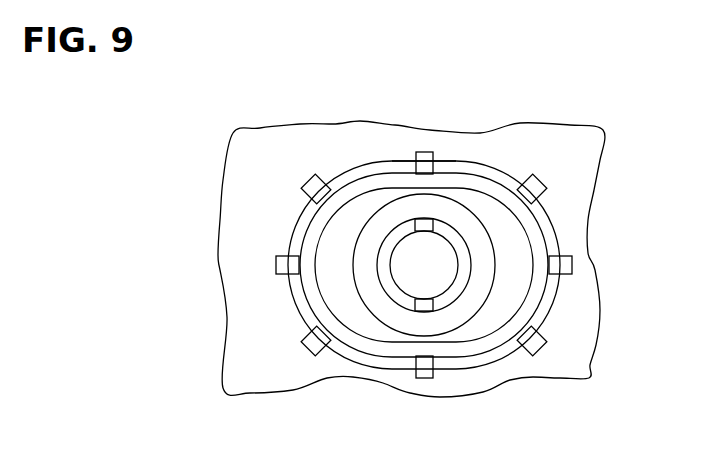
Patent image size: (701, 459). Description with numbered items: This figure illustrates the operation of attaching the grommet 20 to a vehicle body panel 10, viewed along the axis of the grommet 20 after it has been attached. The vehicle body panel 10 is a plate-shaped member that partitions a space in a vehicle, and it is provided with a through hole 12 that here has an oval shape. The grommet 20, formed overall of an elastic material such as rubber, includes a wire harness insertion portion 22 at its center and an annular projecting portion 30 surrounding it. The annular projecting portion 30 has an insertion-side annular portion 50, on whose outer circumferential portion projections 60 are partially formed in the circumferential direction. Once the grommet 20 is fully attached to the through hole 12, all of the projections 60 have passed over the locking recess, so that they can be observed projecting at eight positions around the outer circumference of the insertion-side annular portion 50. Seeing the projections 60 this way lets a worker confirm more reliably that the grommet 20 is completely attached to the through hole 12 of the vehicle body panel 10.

The vehicle body panel 10 is at (585, 148).
The through hole 12 is at (549, 233).
The grommet 20 is at (558, 296).
The wire harness insertion portion 22 is at (462, 238).
The annular projecting portion 30 is at (552, 315).
The insertion-side annular portion 50 is at (375, 179).
The projections 60 is at (429, 160).